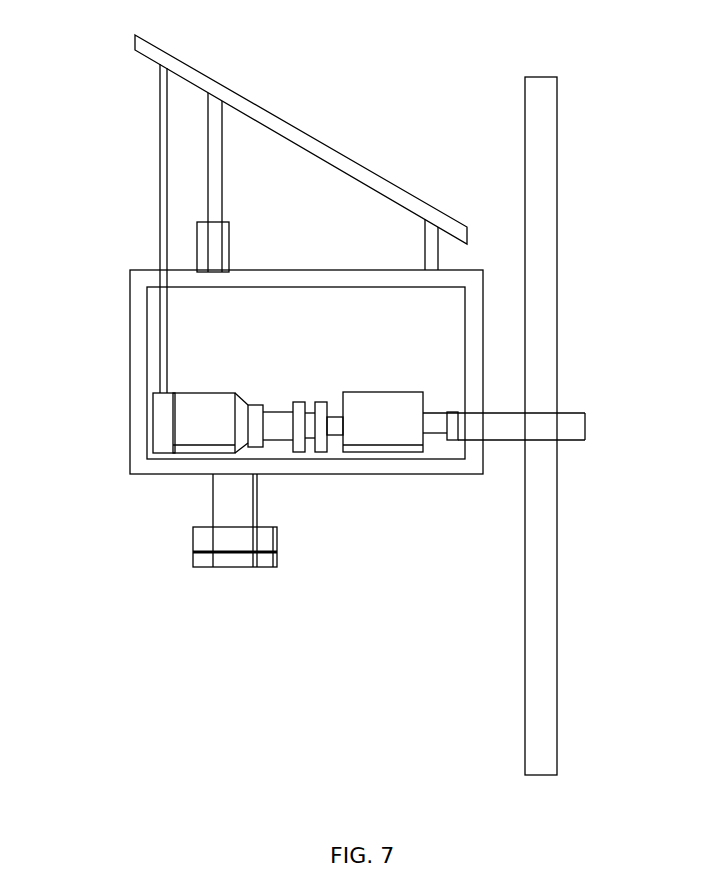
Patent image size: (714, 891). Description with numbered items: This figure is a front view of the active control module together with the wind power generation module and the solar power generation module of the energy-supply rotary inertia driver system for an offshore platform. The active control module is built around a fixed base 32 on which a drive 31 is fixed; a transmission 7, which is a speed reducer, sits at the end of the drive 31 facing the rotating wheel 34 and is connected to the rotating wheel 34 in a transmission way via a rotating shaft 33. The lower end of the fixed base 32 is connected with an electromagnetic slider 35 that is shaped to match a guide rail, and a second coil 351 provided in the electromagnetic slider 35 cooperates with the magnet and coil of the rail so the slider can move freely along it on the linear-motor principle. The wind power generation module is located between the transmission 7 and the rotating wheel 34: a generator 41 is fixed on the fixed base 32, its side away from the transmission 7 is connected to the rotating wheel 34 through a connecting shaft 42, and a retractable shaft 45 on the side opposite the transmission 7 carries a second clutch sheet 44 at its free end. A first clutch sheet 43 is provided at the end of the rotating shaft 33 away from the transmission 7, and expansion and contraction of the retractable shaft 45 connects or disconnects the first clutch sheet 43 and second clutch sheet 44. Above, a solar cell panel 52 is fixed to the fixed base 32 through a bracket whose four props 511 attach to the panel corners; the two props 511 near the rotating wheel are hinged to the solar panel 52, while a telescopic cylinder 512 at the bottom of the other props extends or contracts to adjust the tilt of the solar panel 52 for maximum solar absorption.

The transmission 7 is at (257, 432).
The drive 31 is at (198, 410).
The fixed base 32 is at (137, 383).
The rotating shaft 33 is at (280, 420).
The rotating wheel 34 is at (540, 143).
The electromagnetic slider 35 is at (232, 539).
The second coil 351 is at (240, 553).
The generator 41 is at (377, 425).
The connecting shaft 42 is at (503, 420).
The first clutch sheet 43 is at (300, 452).
The second clutch sheet 44 is at (320, 435).
The retractable shaft 45 is at (335, 427).
The solar cell panel 52 is at (310, 142).
The props 511 is at (215, 158).
The telescopic cylinder 512 is at (215, 245).